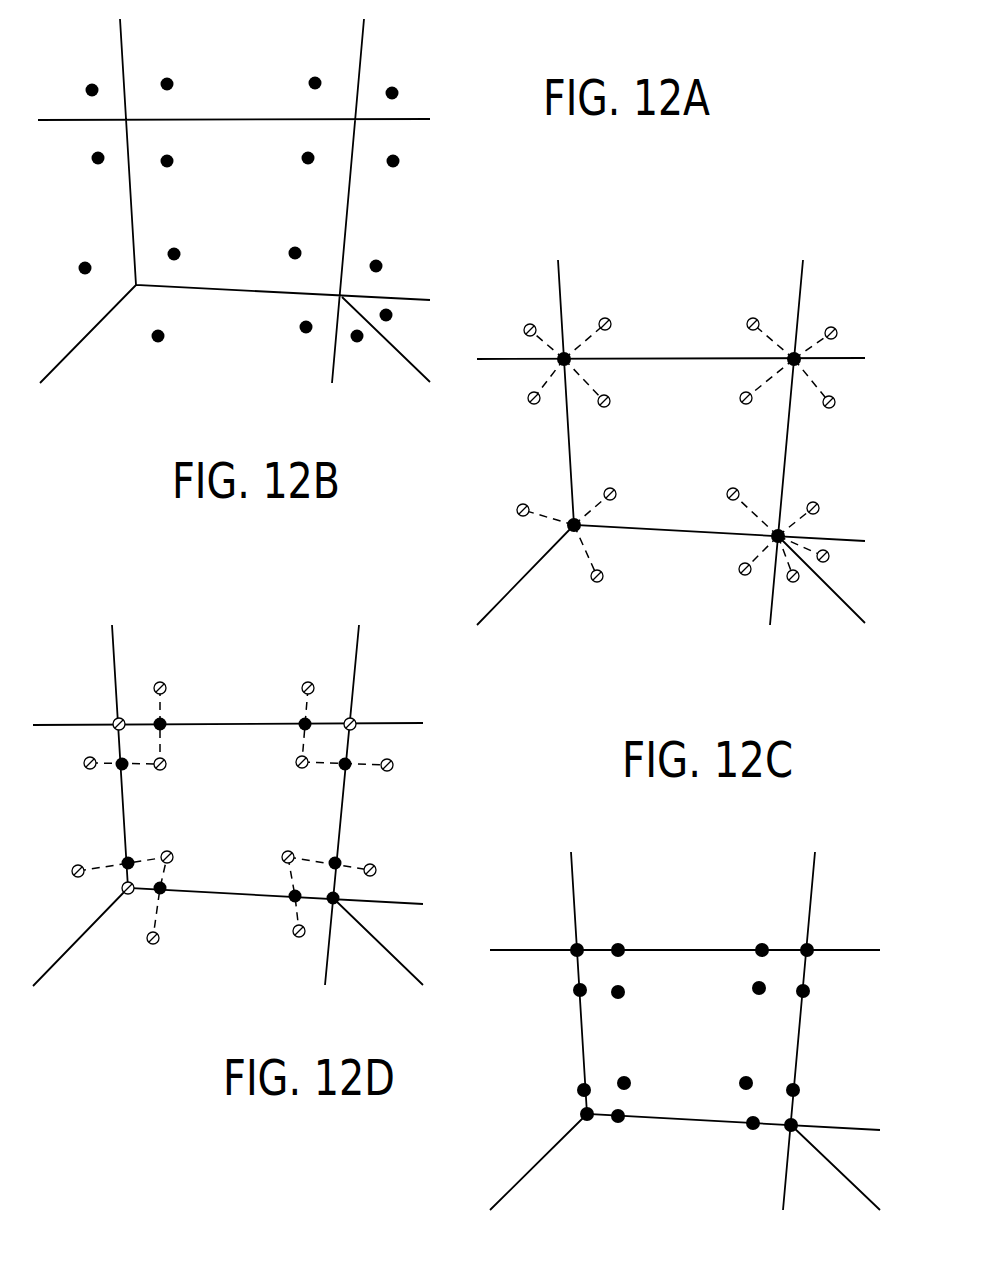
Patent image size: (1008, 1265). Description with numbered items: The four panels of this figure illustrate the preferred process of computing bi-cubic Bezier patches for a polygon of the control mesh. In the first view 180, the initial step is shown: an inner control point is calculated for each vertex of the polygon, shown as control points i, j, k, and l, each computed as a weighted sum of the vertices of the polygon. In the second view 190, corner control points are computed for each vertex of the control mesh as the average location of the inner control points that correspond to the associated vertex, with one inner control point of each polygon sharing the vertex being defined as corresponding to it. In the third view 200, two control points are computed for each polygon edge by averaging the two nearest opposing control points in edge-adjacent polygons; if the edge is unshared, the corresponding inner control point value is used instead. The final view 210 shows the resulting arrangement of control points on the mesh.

In FIG. 12A, the tessellated sub-patch with primitive vertices 180 is at (491, 195).
In FIG. 12B, the vertex attribute sampling pattern 190 is at (416, 513).
In FIG. 12C, the vertex attribute sampling pattern with shared edges 200 is at (461, 758).
In FIG. 12D, the resulting vertex positions 210 is at (483, 1119).